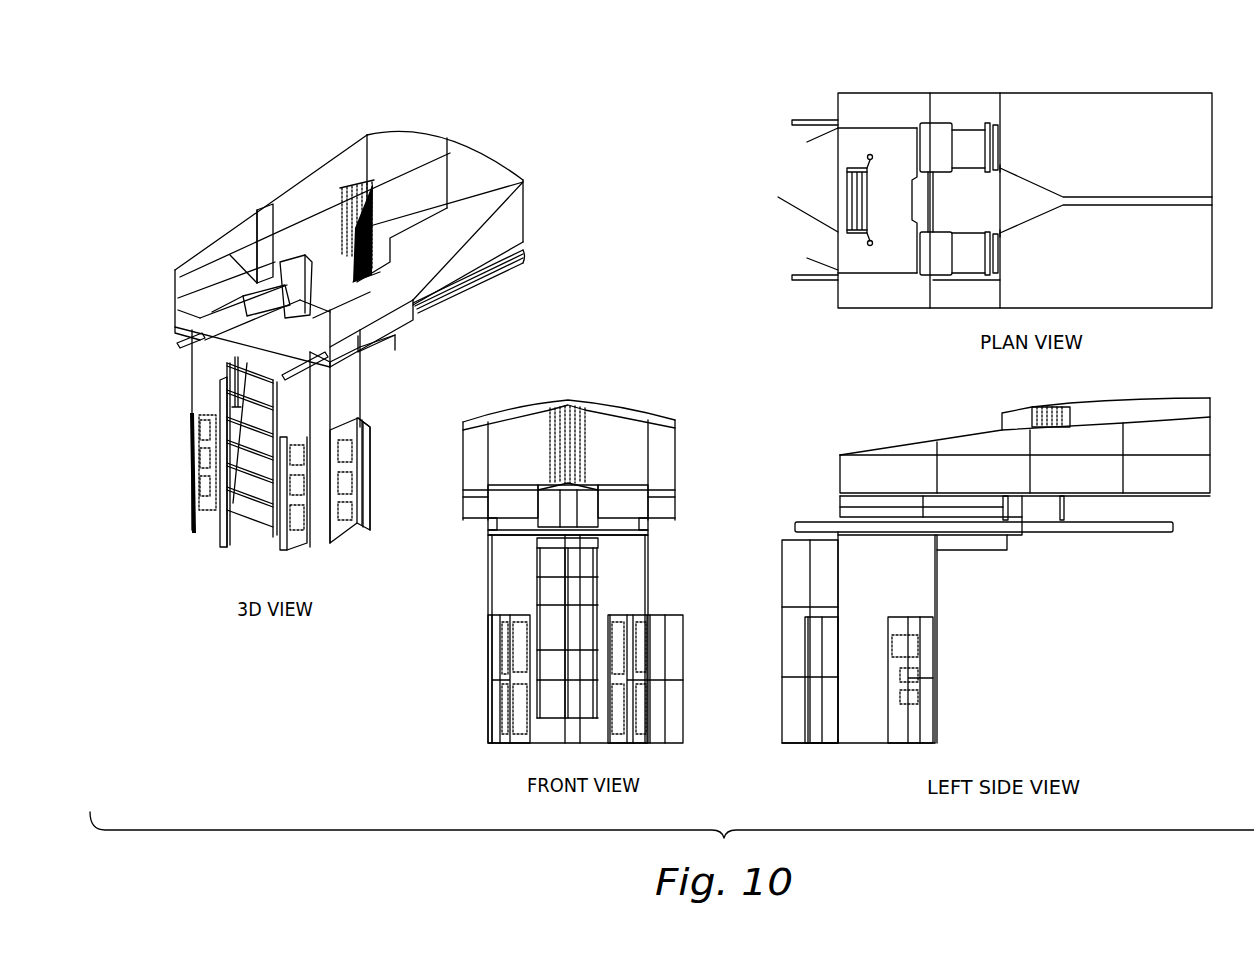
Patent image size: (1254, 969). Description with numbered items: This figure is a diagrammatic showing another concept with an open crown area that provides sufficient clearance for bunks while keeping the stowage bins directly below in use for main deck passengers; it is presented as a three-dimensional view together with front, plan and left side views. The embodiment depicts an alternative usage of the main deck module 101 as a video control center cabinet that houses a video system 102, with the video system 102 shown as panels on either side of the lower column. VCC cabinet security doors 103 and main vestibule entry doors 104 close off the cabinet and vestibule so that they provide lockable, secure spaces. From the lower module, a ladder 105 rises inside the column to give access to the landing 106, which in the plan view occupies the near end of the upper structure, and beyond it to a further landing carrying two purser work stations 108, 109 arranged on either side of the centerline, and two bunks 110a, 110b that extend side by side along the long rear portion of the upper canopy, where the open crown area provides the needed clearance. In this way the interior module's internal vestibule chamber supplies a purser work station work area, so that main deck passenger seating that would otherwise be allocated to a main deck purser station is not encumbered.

The main deck module 101 is at (372, 378).
The video system 102 is at (210, 487).
The VCC cabinet security doors 103 is at (357, 473).
The main vestibule entry doors 104 is at (220, 403).
The ladder 105 is at (257, 510).
The landing 106 is at (892, 147).
The purser work station 108 is at (257, 300).
The purser work station 109 is at (967, 257).
The bunk 110a is at (1152, 133).
The bunk 110b is at (1137, 287).